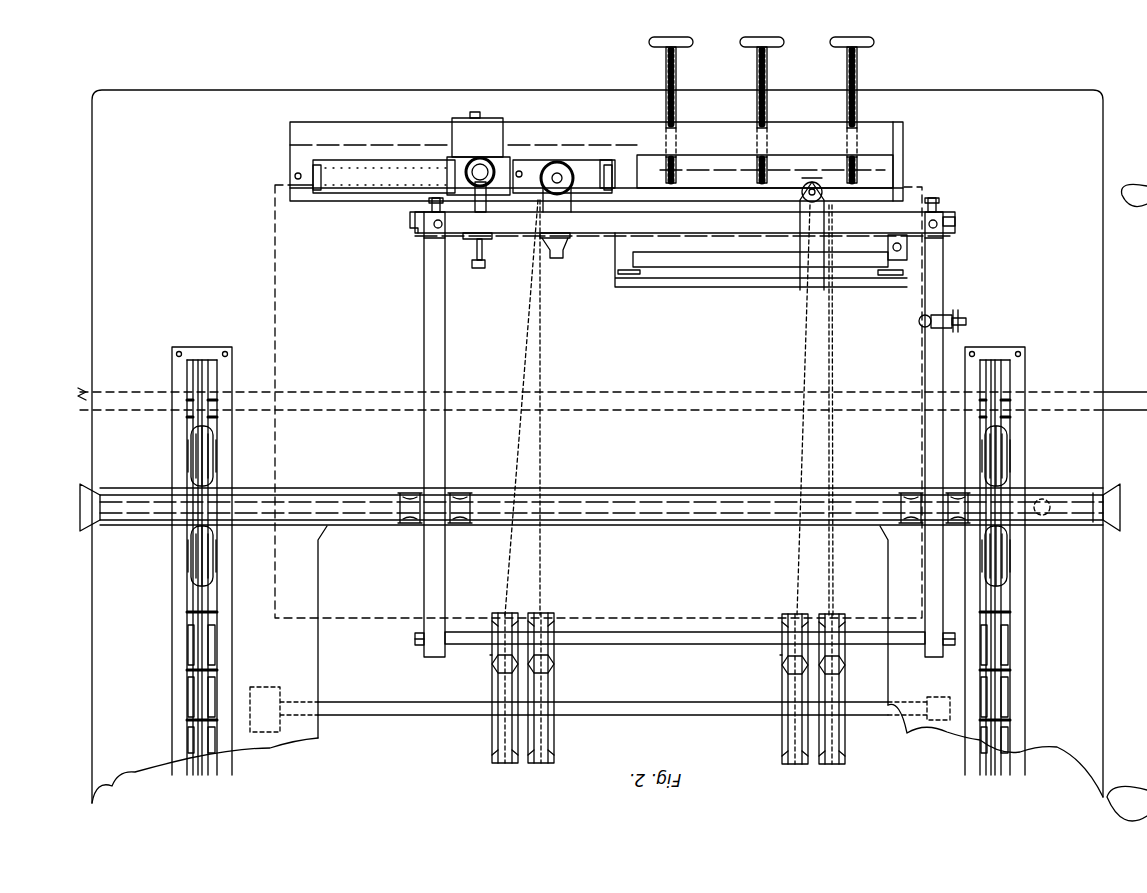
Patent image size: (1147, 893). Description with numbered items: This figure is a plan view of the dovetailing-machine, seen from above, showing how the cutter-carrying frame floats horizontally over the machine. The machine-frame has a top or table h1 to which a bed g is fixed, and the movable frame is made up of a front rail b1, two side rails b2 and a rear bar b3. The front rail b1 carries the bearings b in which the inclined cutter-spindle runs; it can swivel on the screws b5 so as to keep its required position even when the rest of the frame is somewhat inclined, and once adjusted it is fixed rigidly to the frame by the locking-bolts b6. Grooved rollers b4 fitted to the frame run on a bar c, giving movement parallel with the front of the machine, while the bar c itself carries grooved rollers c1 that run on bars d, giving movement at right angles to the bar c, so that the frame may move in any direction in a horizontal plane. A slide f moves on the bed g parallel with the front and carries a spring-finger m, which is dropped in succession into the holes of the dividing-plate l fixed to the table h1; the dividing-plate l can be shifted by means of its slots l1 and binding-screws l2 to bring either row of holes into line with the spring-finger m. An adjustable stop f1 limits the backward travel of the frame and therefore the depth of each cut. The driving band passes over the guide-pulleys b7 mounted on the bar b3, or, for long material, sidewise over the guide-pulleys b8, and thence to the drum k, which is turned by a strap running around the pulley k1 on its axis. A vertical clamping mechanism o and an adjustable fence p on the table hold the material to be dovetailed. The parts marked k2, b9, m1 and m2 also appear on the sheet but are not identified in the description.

The top or table h1 is at (612, 455).
The drum k is at (585, 401).
The pulley k1 is at (922, 325).
The lower rod k2 is at (600, 521).
The bed g is at (596, 119).
The dividing-plate l is at (333, 148).
The slots l1 is at (290, 185).
The binding-screws l2 is at (313, 170).
The vertical clamping mechanism o is at (695, 188).
The slide f is at (478, 162).
The guide-pulleys b8 is at (467, 167).
The spring-finger m is at (522, 170).
The wheel b9 is at (550, 168).
The guide pulley m1 is at (812, 182).
The pulley pin m2 is at (827, 165).
The screws b5 is at (416, 222).
The locking-bolts b6 is at (434, 206).
The side rail of movable frame b2 is at (675, 434).
The bearings b is at (948, 318).
The adjustable fence p is at (905, 248).
The adjustable stop f1 is at (663, 500).
The front rail b1 is at (571, 242).
The guide-pulleys b7 is at (490, 664).
The bar of movable frame b3 is at (685, 647).
The bar c is at (665, 502).
The grooved rollers b4 is at (405, 513).
The bars d is at (185, 648).
The grooved rollers c1 is at (205, 445).